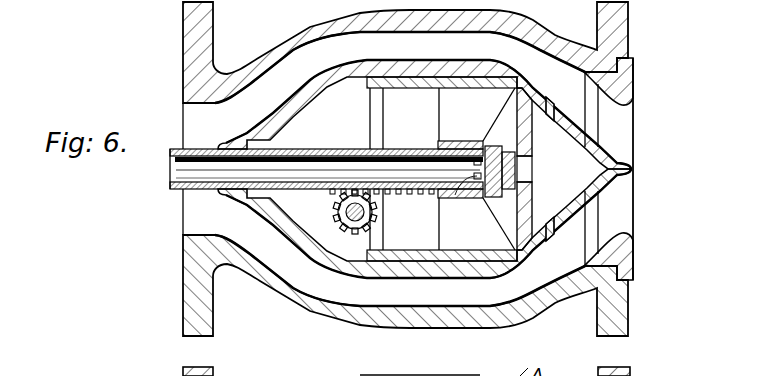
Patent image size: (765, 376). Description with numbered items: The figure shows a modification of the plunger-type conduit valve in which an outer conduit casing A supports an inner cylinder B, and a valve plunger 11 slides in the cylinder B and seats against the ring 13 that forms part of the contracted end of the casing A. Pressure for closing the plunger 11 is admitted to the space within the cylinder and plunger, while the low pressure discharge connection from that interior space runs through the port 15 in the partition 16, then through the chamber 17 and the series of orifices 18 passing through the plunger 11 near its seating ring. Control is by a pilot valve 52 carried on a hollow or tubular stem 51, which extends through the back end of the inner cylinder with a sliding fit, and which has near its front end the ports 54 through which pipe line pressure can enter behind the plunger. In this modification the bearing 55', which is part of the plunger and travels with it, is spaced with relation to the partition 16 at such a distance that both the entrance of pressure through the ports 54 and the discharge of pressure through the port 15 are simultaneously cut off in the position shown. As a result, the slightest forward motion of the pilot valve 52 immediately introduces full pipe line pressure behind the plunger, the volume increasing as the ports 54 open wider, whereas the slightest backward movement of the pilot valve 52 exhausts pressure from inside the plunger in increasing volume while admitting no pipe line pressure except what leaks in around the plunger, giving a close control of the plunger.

The outer conduit casing A is at (517, 27).
The inner cylinder B is at (455, 68).
The valve plunger 11 is at (412, 88).
The ring 13 is at (622, 252).
The port 15 is at (532, 168).
The partition 16 is at (532, 129).
The chamber 17 is at (558, 199).
The orifices 18 is at (552, 106).
The stem 51 is at (335, 148).
The pilot valve 52 is at (505, 146).
The ports 54 is at (468, 199).
The bearing 55' is at (460, 132).